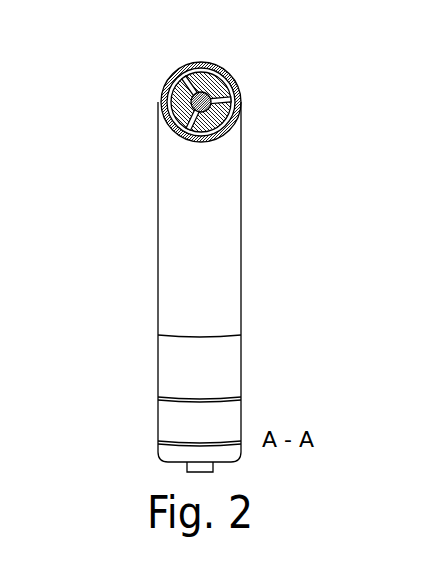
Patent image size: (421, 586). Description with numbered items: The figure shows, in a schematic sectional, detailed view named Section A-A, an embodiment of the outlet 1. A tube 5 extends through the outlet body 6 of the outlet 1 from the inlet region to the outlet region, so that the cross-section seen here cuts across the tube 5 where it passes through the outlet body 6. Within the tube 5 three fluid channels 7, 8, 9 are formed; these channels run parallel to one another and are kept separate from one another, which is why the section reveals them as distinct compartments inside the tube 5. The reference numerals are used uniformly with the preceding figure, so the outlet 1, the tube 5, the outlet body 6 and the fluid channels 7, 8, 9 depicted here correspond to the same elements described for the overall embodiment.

The outlet 1 is at (113, 302).
The tube 5 is at (238, 100).
The outlet body 6 is at (232, 82).
The fluid channel 7 is at (222, 71).
The fluid channel 8 is at (160, 103).
The fluid channel 9 is at (242, 120).